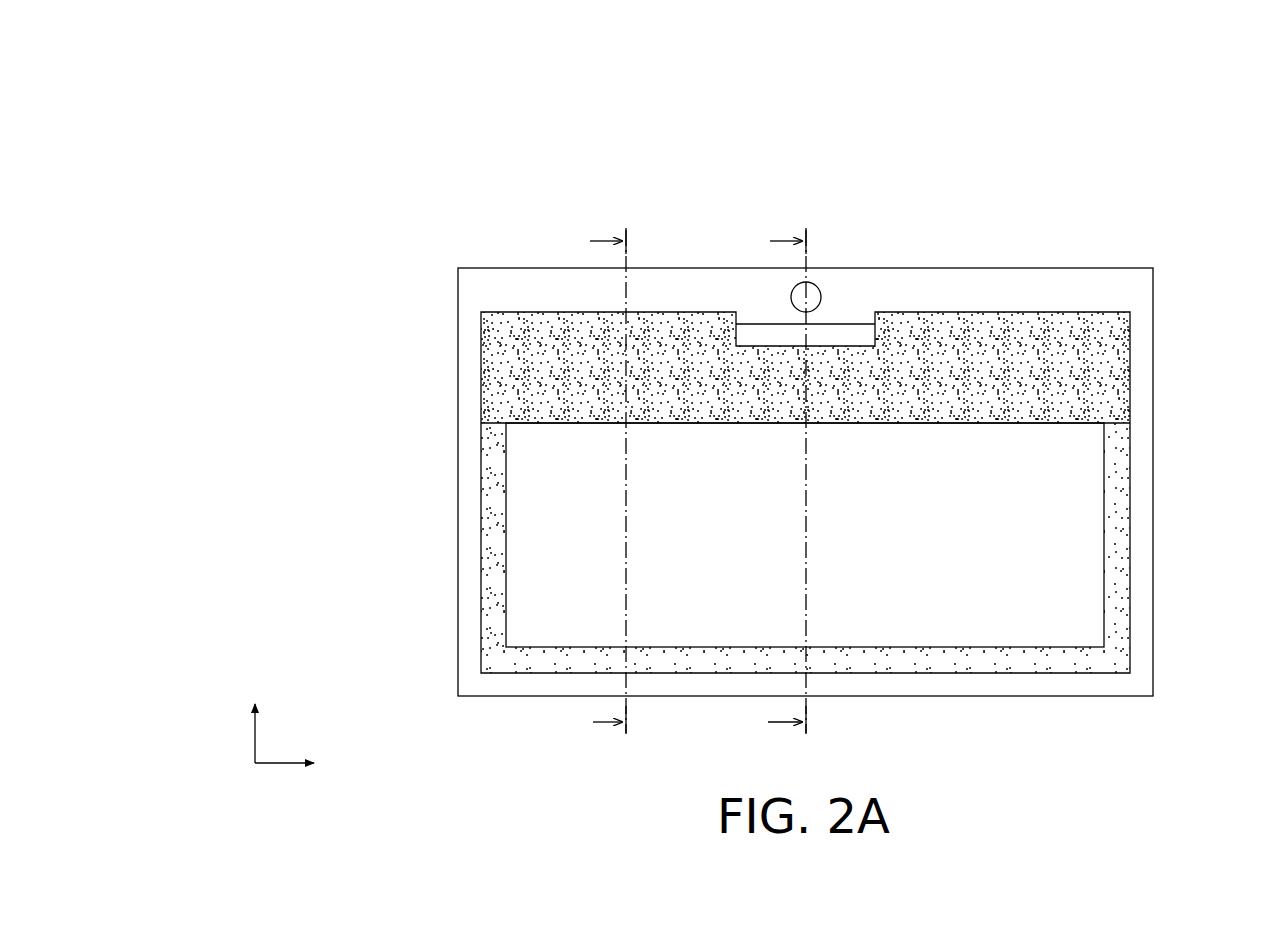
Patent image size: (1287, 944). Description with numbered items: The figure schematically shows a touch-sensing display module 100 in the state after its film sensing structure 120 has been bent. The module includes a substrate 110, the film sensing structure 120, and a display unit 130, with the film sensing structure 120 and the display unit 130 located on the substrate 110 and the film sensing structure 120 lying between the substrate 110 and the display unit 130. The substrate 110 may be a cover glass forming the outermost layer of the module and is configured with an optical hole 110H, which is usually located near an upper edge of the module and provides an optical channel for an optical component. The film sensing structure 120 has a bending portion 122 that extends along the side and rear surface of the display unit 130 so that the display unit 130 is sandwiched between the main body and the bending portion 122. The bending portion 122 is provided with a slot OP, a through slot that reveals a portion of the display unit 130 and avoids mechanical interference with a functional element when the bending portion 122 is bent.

The touch-sensing display module 100 is at (292, 88).
The substrate 110 is at (446, 412).
The optical hole 110H is at (814, 283).
The film sensing structure 120 is at (469, 490).
The bending portion 122 is at (1118, 367).
The display unit 130 is at (1077, 482).
The slot OP is at (874, 340).